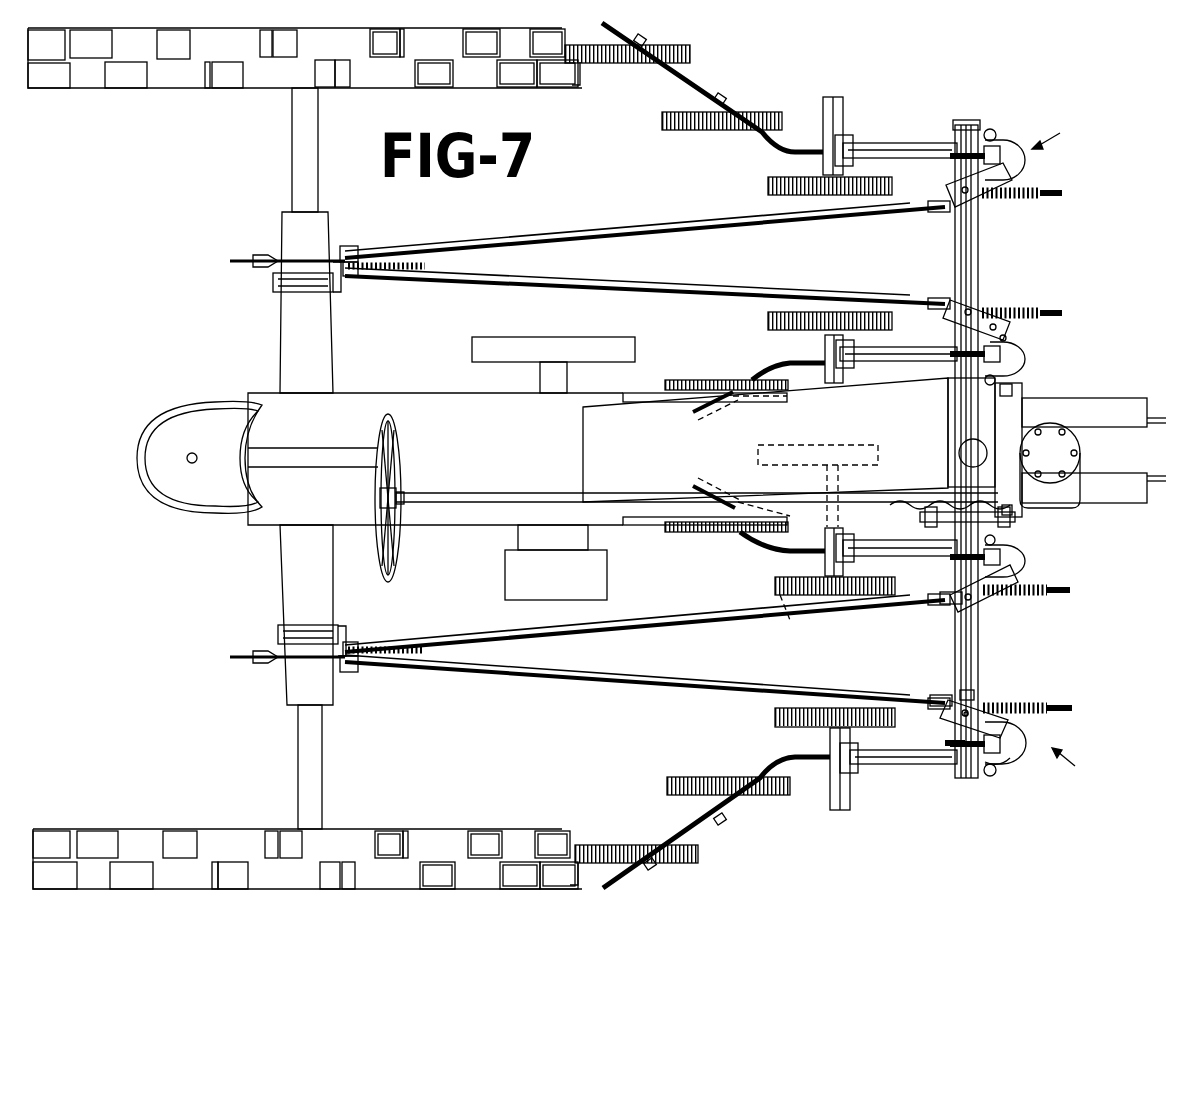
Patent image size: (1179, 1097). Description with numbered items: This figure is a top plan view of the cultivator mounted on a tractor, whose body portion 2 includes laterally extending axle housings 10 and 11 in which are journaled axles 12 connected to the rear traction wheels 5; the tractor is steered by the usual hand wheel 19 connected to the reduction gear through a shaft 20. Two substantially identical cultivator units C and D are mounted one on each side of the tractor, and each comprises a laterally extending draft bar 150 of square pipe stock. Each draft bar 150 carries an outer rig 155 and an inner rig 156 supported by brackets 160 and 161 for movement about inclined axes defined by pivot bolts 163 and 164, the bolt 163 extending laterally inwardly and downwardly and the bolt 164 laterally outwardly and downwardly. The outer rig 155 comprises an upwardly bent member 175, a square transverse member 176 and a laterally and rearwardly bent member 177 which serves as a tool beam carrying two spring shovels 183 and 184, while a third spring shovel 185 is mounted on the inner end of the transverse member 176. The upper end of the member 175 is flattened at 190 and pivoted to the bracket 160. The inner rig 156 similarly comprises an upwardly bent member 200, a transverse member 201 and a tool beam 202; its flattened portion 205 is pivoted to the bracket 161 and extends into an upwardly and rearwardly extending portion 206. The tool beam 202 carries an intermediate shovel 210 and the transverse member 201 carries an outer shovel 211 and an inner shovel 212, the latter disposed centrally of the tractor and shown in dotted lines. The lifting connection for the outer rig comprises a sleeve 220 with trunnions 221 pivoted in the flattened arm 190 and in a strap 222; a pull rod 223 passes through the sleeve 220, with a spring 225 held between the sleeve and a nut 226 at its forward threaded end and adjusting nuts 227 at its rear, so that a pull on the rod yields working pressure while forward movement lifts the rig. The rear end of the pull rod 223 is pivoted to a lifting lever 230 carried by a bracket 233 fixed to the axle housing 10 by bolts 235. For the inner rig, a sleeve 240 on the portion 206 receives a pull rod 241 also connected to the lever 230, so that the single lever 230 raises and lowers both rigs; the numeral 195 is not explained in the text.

The body portion 2 is at (452, 390).
The rear traction wheels 5 is at (274, 70).
The axle housing 10 is at (302, 548).
The axle housing 11 is at (298, 342).
The axles 12 is at (310, 158).
The hand wheel 19 is at (396, 543).
The shaft 20 is at (481, 485).
The draft bar 150 is at (970, 272).
The outer rig 155 is at (740, 98).
The inner rig 156 is at (752, 552).
The bracket 160 is at (991, 142).
The bracket 161 is at (1000, 376).
The pivot bolt 163 is at (982, 126).
The pivot bolt 164 is at (1012, 353).
The upwardly bent member 175 is at (882, 764).
The transverse member 176 is at (836, 798).
The laterally and rearwardly bent member 177 is at (682, 84).
The spring shovel 183 is at (600, 855).
The spring shovel 184 is at (705, 774).
The spring shovel 185 is at (786, 708).
The flattened end 190 is at (1012, 760).
The pin 195 is at (963, 744).
The upwardly bent member 200 is at (898, 545).
The transverse member 201 is at (826, 341).
The tool beam 202 is at (772, 556).
The flattened portion 205 is at (1030, 568).
The upwardly and rearwardly extending portion 206 is at (976, 612).
The intermediate shovel 210 is at (679, 532).
The outer shovel 211 is at (778, 594).
The inner shovel 212 is at (852, 452).
The sleeve 220 is at (962, 688).
The trunnions 221 is at (958, 766).
The strap 222 is at (975, 682).
The pull rod 223 is at (733, 222).
The spring 225 is at (1020, 701).
The nut 226 is at (1070, 709).
The adjusting nuts 227 is at (938, 698).
The lifting lever 230 is at (305, 659).
The bracket 233 is at (336, 626).
The bolts 235 is at (278, 633).
The sleeve 240 is at (958, 608).
The pull rod 241 is at (678, 285).
The cultivator unit C is at (1057, 133).
The cultivator unit D is at (1074, 765).